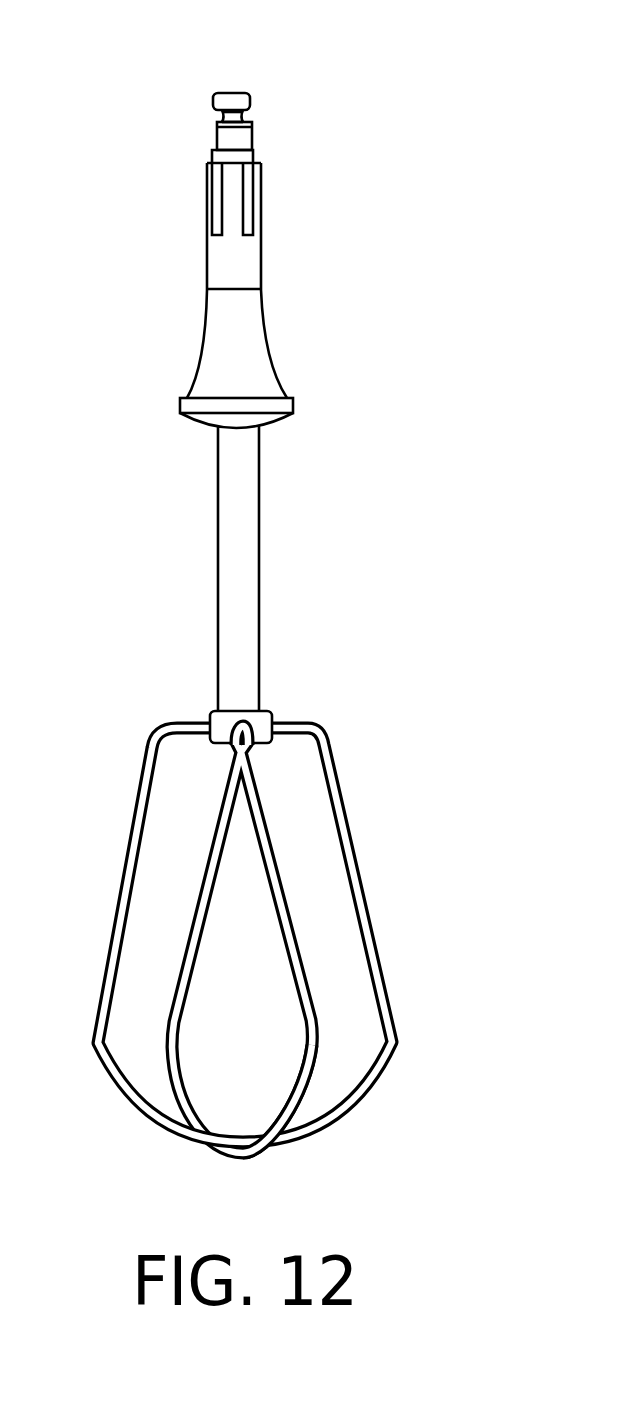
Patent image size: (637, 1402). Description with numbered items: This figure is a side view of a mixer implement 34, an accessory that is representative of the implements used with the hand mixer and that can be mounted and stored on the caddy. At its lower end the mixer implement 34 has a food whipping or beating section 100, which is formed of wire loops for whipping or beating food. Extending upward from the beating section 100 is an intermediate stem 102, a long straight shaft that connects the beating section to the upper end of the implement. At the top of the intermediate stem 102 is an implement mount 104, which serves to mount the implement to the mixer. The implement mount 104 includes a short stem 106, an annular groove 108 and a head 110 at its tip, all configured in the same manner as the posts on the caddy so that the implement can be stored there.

The mixer implement 34 is at (307, 579).
The food whipping or beating section 100 is at (395, 1007).
The intermediate stem 102 is at (228, 625).
The implement mount 104 is at (182, 334).
The short stem 106 is at (237, 140).
The annular groove 108 is at (250, 114).
The head 110 is at (229, 93).